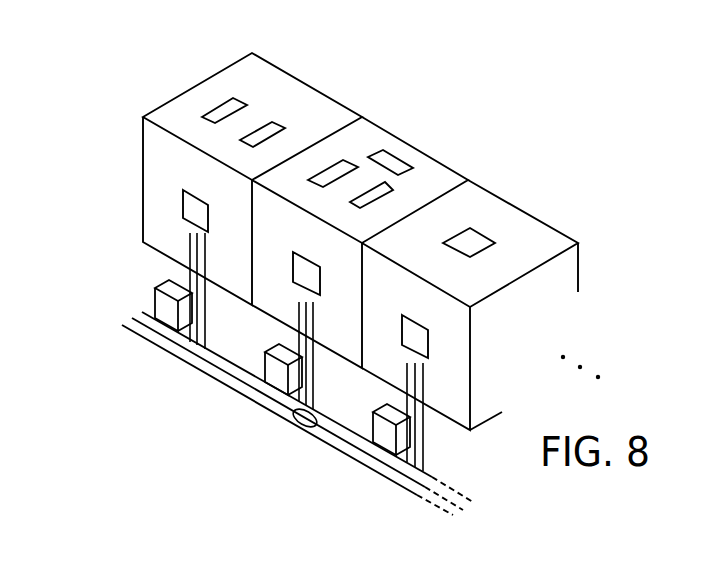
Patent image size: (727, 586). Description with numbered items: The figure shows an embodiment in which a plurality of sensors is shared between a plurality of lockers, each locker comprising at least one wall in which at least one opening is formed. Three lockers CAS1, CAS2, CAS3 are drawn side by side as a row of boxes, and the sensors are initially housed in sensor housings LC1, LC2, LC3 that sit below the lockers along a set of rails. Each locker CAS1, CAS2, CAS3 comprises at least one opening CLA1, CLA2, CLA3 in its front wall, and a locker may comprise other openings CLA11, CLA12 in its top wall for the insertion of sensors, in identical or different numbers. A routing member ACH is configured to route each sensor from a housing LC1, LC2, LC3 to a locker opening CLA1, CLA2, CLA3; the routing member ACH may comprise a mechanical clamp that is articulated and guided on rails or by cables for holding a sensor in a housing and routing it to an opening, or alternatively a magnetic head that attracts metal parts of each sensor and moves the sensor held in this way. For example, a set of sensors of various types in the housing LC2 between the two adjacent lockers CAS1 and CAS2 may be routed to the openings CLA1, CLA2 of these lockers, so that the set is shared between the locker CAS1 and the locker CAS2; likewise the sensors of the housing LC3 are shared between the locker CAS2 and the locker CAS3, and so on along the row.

The locker CAS1 is at (172, 115).
The locker CAS2 is at (435, 177).
The locker CAS3 is at (522, 227).
The opening CLA11 is at (227, 105).
The opening CLA12 is at (270, 122).
The opening CLA1 is at (195, 208).
The opening CLA2 is at (305, 270).
The opening CLA3 is at (415, 333).
The sensor housing LC1 is at (167, 313).
The sensor housing LC2 is at (277, 375).
The sensor housing LC3 is at (386, 437).
The routing member ACH is at (298, 432).